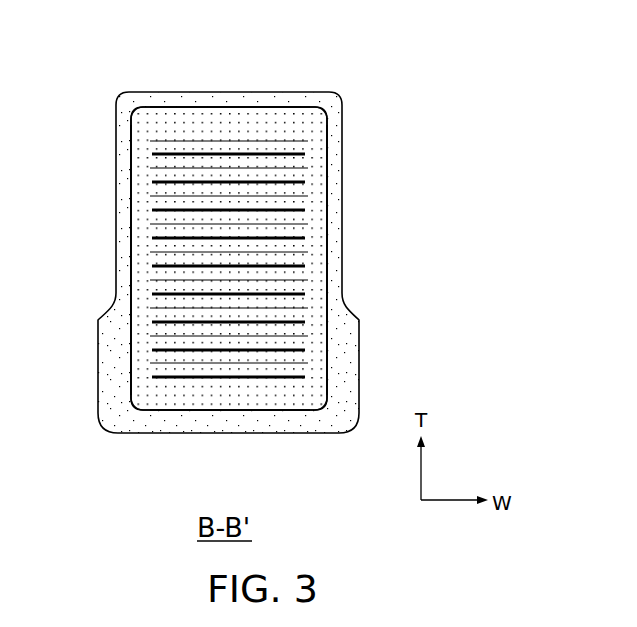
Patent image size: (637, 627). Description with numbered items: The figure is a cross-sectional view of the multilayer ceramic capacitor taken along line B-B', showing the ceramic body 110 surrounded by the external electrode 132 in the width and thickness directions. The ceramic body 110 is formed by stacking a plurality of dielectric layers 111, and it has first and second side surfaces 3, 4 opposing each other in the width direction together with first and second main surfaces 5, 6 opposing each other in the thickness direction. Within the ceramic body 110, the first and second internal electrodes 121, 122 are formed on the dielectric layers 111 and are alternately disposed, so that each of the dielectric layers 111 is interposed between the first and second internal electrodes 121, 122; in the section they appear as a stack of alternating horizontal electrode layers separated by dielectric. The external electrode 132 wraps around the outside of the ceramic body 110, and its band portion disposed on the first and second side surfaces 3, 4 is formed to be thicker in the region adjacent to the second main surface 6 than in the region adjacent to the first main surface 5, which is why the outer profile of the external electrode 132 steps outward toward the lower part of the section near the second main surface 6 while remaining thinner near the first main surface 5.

The ceramic body 110 is at (168, 107).
The dielectric layers 111 is at (177, 303).
The first internal electrodes 121 is at (267, 198).
The second internal electrodes 122 is at (291, 237).
The external electrode 132 is at (334, 128).
The first side surface 3 is at (119, 170).
The second side surface 4 is at (340, 169).
The first main surface 5 is at (287, 96).
The second main surface 6 is at (263, 425).